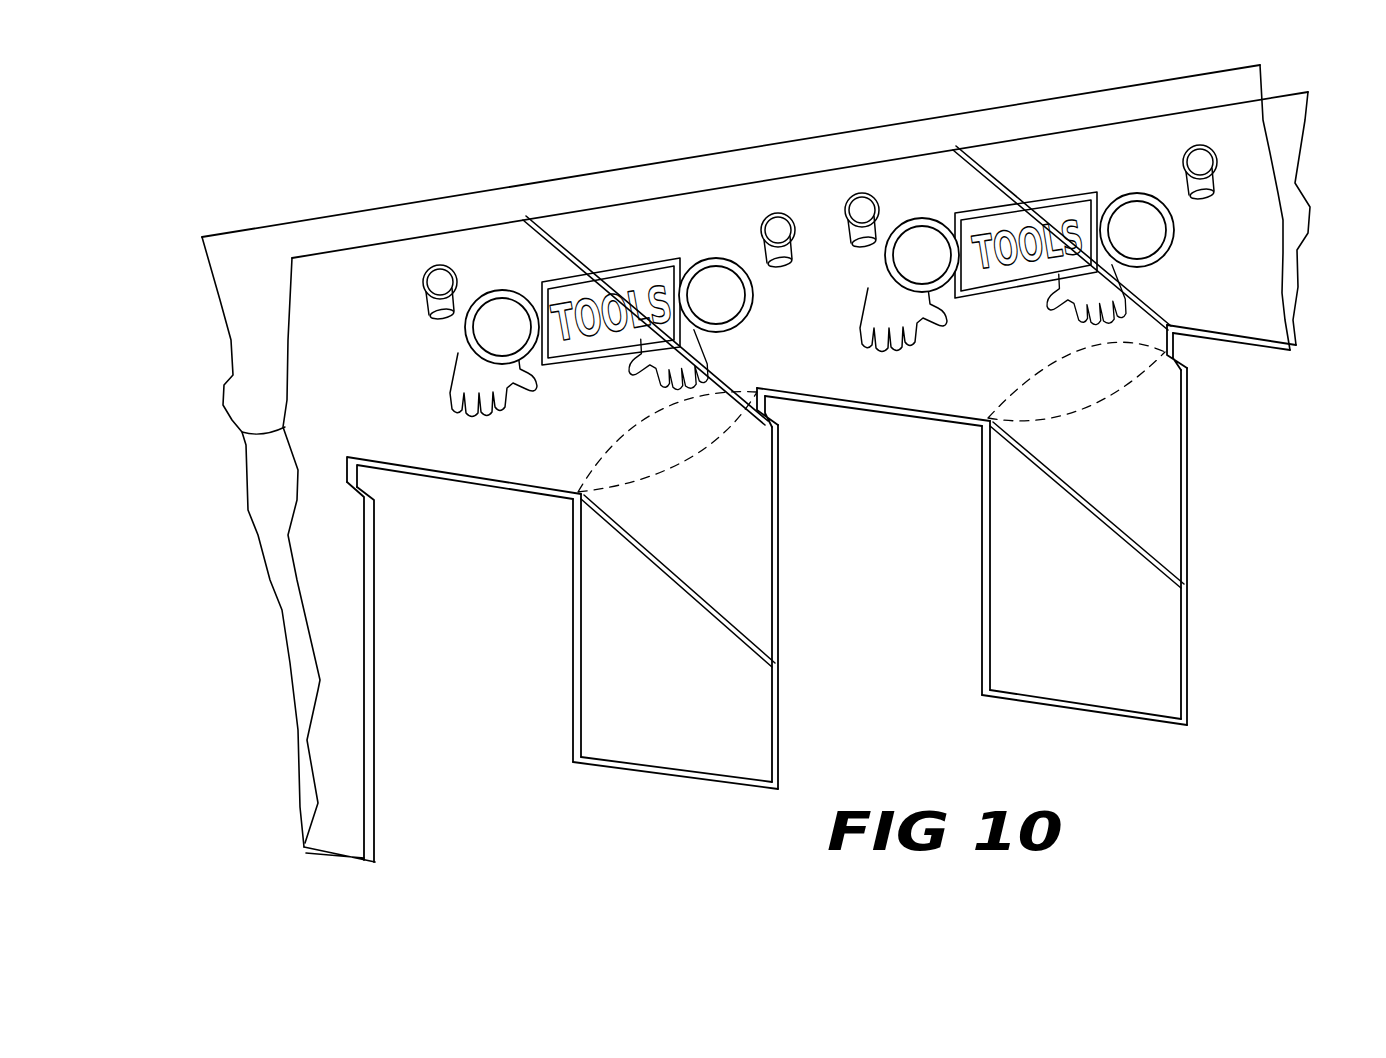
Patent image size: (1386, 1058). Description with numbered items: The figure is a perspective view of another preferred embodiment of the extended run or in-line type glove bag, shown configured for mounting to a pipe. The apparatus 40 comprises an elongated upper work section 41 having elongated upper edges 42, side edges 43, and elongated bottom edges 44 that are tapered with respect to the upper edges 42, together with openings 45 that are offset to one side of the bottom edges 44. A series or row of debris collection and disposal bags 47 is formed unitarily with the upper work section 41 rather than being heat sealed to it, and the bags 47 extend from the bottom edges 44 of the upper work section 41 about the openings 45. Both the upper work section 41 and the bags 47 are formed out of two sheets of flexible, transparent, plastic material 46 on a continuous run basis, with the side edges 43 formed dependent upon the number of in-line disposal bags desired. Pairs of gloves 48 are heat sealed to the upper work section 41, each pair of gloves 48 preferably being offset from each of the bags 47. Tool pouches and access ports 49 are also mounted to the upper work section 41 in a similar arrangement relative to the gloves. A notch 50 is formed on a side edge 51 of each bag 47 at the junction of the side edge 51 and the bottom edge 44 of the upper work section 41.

The apparatus 40 is at (1060, 83).
The upper work section 41 is at (1227, 213).
The upper edges 42 is at (566, 178).
The side edges 43 is at (246, 432).
The bottom edges 44 is at (467, 483).
The openings 45 is at (668, 476).
The flexible, transparent, plastic material 46 is at (413, 250).
The debris collection and disposal bags 47 is at (682, 743).
The pairs of gloves 48 is at (1140, 230).
The tool pouches and access ports 49 is at (782, 230).
The notch 50 is at (772, 408).
The side edge 51 is at (780, 573).